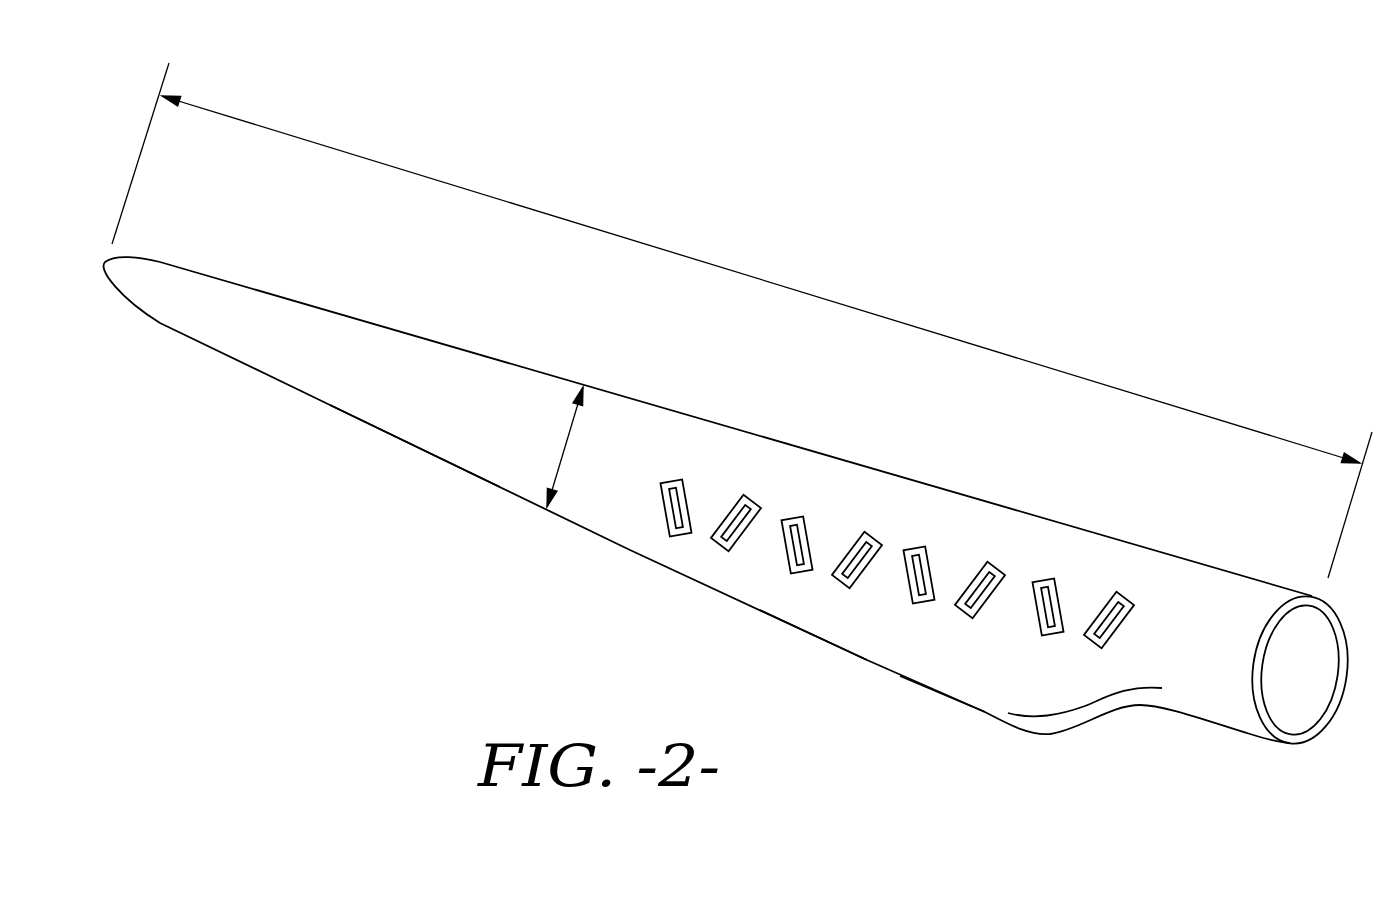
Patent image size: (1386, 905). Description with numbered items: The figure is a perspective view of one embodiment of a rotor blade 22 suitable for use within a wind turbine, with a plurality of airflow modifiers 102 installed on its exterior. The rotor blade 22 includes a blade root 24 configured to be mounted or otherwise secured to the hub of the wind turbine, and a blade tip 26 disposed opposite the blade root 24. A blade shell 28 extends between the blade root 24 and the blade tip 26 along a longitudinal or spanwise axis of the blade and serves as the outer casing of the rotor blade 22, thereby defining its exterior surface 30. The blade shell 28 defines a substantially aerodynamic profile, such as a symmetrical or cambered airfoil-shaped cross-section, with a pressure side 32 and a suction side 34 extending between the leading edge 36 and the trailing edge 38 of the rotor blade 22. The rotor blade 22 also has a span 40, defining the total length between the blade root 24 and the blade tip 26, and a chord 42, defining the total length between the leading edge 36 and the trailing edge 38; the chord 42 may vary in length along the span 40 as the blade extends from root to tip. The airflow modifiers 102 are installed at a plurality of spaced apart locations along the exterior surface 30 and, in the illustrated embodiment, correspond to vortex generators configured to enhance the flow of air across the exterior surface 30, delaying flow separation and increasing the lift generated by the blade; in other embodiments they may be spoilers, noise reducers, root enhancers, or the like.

The rotor blade 22 is at (1020, 270).
The blade root 24 is at (1218, 702).
The blade tip 26 is at (103, 266).
The blade shell 28 is at (415, 467).
The exterior surface 30 is at (447, 422).
The pressure side 32 is at (952, 640).
The suction side 34 is at (857, 623).
The leading edge 36 is at (977, 497).
The trailing edge 38 is at (600, 538).
The span 40 is at (548, 210).
The chord 42 is at (563, 455).
The airflow modifiers 102 is at (858, 535).